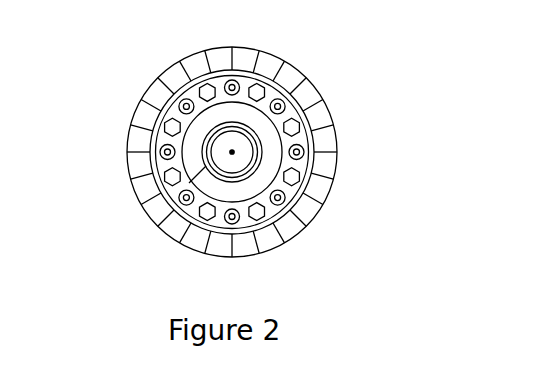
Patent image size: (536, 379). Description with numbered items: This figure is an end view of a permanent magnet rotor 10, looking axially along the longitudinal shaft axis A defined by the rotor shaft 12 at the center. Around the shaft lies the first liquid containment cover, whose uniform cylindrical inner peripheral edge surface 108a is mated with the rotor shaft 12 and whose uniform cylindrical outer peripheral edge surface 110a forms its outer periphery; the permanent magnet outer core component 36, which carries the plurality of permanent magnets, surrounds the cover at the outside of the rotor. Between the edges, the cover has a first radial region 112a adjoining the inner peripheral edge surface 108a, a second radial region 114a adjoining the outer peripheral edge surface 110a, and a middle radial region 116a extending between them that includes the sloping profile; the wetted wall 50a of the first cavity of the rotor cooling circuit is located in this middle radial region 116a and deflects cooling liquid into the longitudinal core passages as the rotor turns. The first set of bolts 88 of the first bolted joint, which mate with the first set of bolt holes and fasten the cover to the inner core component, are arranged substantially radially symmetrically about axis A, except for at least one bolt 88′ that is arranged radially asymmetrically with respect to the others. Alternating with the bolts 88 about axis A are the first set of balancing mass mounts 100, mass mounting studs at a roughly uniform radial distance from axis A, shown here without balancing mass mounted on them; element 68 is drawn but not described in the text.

The rotor 10 is at (352, 152).
The rotor shaft 12 is at (240, 162).
The permanent magnet outer core component 36 is at (310, 214).
The wetted wall 50a is at (270, 142).
The housing ring 68 is at (188, 238).
The first set of bolts 88 is at (208, 84).
The bolt 88′ is at (302, 112).
The first set of balancing mass mounts 100 is at (232, 80).
The inner peripheral edge surface 108a is at (238, 166).
The outer peripheral edge surface 110a is at (276, 226).
The first radial region 112a is at (162, 226).
The second radial region 114a is at (183, 150).
The middle radial region 116a is at (134, 135).
The longitudinal shaft axis A is at (232, 150).